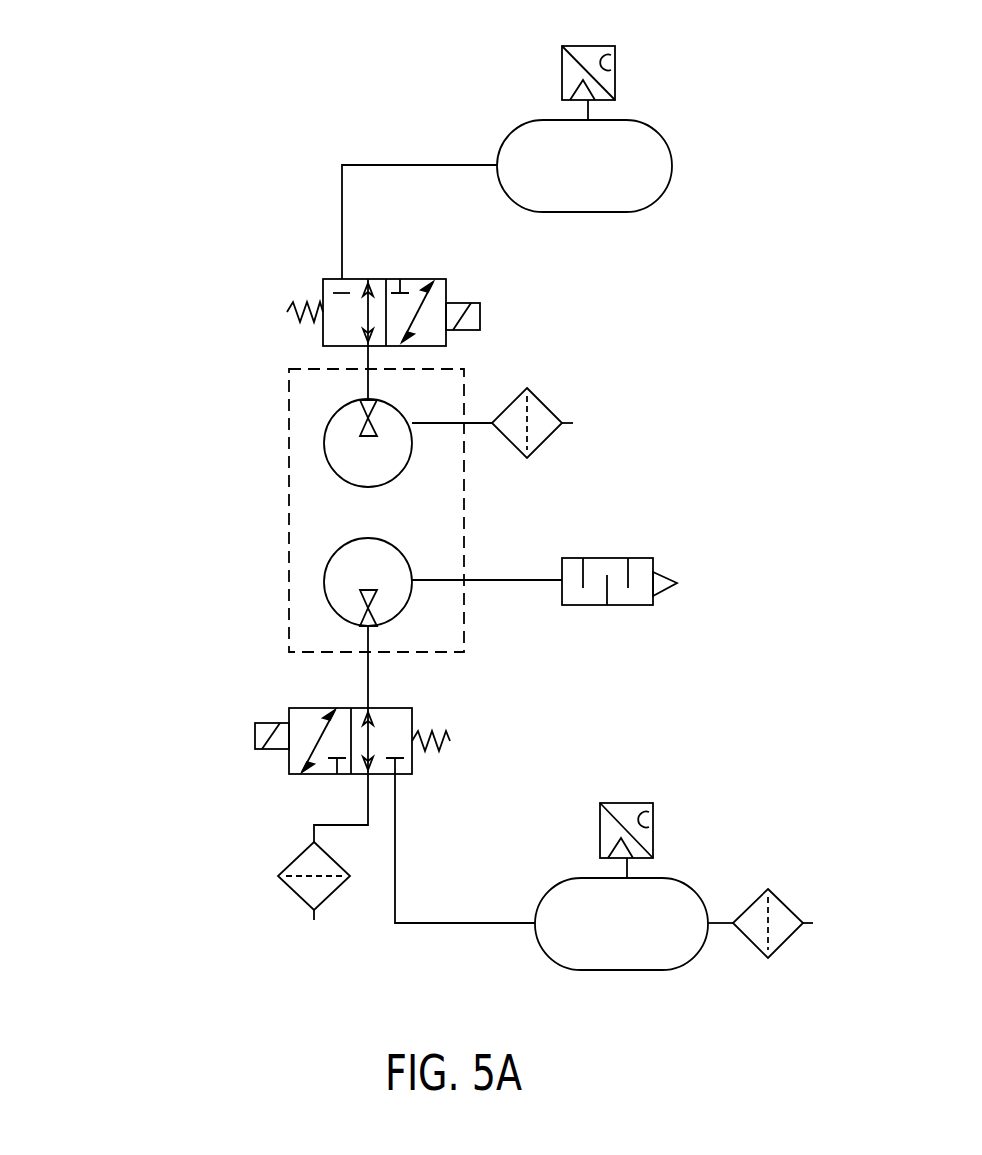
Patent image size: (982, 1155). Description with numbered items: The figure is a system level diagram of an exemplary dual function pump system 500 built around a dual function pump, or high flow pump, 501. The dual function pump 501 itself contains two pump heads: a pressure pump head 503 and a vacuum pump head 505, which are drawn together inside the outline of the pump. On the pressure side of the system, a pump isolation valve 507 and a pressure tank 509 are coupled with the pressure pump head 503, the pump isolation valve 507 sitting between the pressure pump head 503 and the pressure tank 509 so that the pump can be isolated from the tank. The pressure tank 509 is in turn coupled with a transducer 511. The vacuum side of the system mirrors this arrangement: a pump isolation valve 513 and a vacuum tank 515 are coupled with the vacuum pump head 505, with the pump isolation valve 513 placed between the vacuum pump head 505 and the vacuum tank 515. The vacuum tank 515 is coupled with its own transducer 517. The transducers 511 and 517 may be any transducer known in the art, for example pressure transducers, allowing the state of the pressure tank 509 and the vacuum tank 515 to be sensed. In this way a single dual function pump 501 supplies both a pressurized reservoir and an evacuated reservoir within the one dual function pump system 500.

The dual function pump system 500 is at (172, 120).
The dual function pump 501 is at (490, 510).
The pressure pump head 503 is at (340, 427).
The vacuum pump head 505 is at (340, 580).
The pump isolation valve 507 is at (446, 283).
The pressure tank 509 is at (672, 165).
The transducer 511 is at (615, 48).
The pump isolation valve 513 is at (412, 712).
The vacuum tank 515 is at (678, 878).
The transducer 517 is at (645, 803).